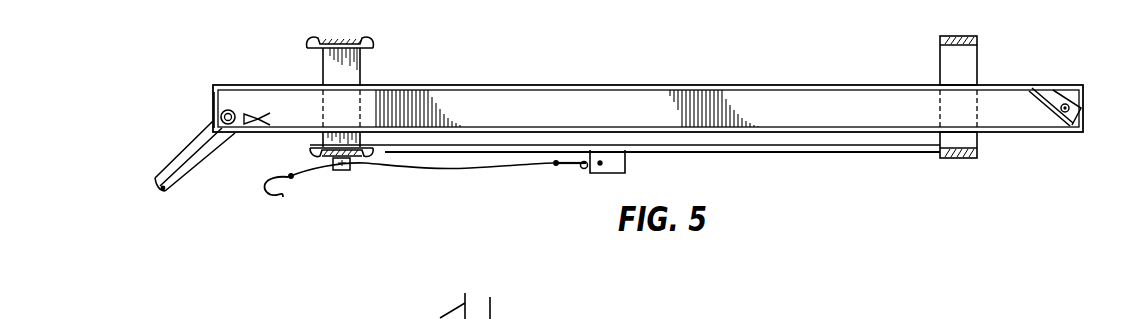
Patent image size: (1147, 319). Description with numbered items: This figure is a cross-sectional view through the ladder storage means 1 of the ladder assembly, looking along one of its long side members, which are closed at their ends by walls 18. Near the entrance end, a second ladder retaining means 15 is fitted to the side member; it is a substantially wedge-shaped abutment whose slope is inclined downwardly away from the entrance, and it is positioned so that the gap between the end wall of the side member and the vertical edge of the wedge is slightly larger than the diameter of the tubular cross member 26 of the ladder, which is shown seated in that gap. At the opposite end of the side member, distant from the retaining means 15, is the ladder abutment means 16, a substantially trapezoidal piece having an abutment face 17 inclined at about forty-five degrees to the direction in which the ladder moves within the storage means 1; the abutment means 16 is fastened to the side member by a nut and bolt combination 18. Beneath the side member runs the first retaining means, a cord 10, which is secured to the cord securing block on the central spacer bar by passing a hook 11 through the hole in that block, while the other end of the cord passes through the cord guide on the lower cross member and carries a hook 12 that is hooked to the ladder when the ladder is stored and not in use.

The ladder storage means 1 is at (598, 66).
The cord 10 is at (466, 170).
The hook 11 is at (576, 166).
The hook 12 is at (283, 197).
The second ladder retaining means 15 is at (262, 118).
The ladder abutment means 16 is at (1049, 111).
The abutment face 17 is at (1038, 92).
The nut and bolt combination 18 is at (214, 92).
The tubular cross member 26 is at (217, 110).